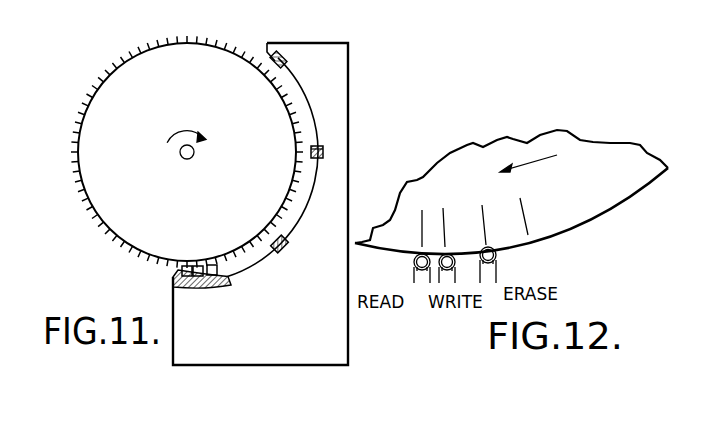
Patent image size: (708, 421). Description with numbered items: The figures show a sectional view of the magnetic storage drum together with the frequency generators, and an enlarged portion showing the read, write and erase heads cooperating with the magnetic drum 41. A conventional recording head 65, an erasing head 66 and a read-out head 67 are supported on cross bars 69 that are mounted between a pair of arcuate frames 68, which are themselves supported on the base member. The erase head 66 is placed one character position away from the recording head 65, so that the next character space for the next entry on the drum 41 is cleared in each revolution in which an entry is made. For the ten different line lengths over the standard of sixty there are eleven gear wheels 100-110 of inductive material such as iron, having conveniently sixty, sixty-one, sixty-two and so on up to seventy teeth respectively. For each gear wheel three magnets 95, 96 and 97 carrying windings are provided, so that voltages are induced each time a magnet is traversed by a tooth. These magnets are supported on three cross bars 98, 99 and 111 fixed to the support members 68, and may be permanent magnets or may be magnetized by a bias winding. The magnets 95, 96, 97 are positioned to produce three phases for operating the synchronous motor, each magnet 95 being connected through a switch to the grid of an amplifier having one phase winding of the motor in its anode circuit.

In FIG. 11, the gear wheels 100-110 is at (168, 147).
In FIG. 11, the magnet 97 is at (268, 72).
In FIG. 11, the arcuate frames 68 is at (347, 326).
In FIG. 11, the magnet 95 is at (277, 238).
In FIG. 11, the cross bar 111 is at (270, 43).
In FIG. 11, the cross bar 99 is at (323, 152).
In FIG. 11, the magnet 96 is at (311, 150).
In FIG. 11, the cross bar 98 is at (287, 247).
In FIG. 11, the cross bars 69 is at (180, 288).
In FIG. 11, the read-out head 67 is at (186, 266).
In FIG. 12, the read-out head 67 is at (412, 264).
In FIG. 11, the recording head 65 is at (198, 266).
In FIG. 12, the recording head 65 is at (461, 274).
In FIG. 11, the erasing head 66 is at (212, 265).
In FIG. 12, the erasing head 66 is at (497, 255).
In FIG. 12, the recording medium 41 is at (583, 207).